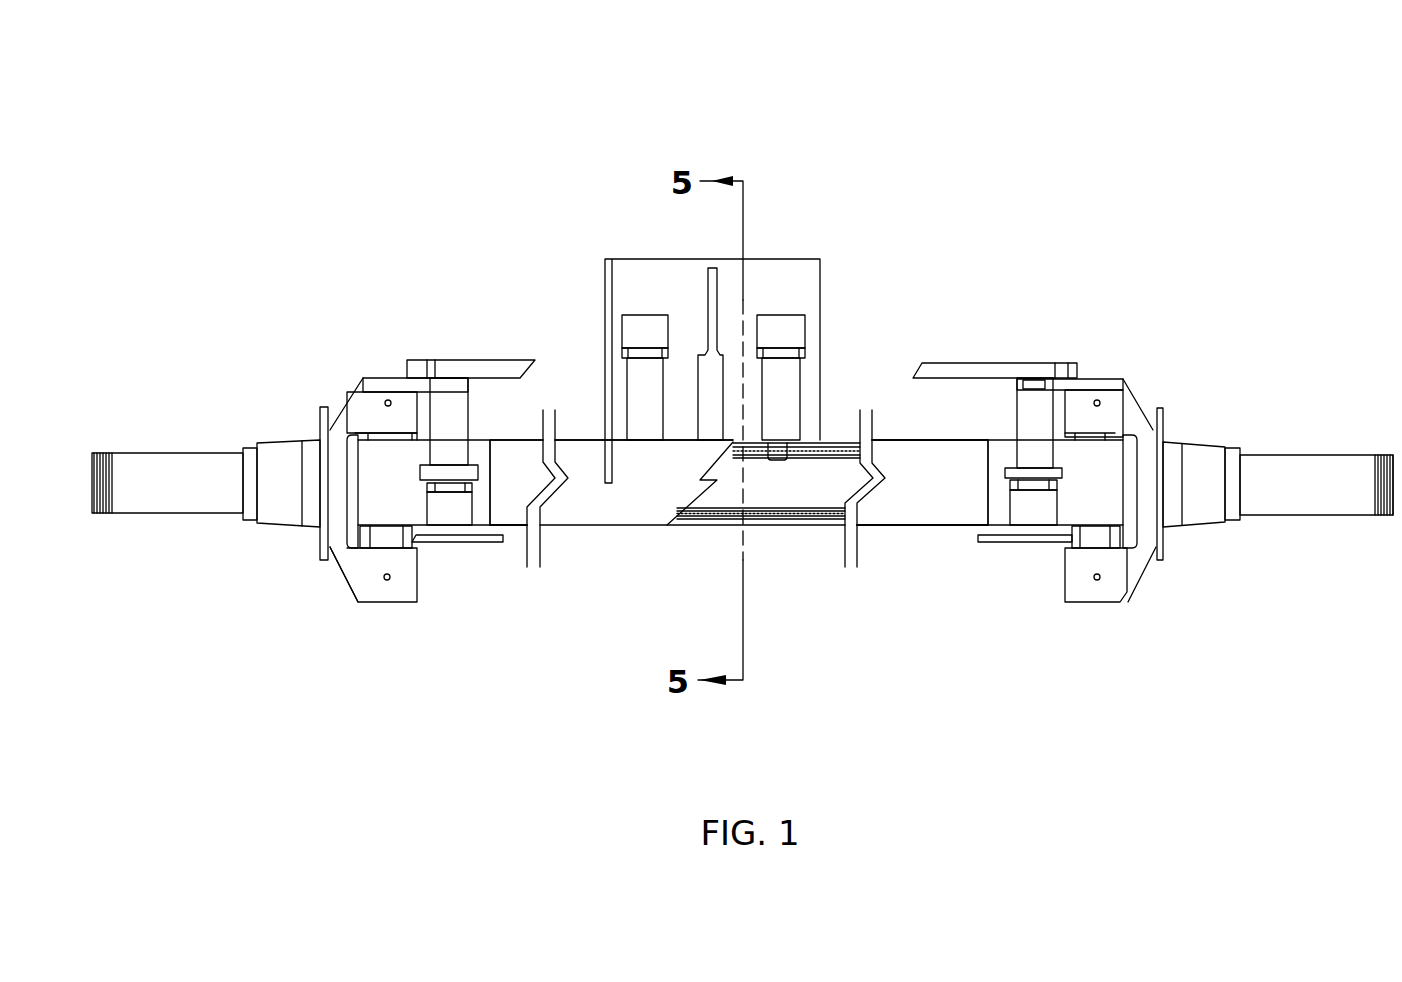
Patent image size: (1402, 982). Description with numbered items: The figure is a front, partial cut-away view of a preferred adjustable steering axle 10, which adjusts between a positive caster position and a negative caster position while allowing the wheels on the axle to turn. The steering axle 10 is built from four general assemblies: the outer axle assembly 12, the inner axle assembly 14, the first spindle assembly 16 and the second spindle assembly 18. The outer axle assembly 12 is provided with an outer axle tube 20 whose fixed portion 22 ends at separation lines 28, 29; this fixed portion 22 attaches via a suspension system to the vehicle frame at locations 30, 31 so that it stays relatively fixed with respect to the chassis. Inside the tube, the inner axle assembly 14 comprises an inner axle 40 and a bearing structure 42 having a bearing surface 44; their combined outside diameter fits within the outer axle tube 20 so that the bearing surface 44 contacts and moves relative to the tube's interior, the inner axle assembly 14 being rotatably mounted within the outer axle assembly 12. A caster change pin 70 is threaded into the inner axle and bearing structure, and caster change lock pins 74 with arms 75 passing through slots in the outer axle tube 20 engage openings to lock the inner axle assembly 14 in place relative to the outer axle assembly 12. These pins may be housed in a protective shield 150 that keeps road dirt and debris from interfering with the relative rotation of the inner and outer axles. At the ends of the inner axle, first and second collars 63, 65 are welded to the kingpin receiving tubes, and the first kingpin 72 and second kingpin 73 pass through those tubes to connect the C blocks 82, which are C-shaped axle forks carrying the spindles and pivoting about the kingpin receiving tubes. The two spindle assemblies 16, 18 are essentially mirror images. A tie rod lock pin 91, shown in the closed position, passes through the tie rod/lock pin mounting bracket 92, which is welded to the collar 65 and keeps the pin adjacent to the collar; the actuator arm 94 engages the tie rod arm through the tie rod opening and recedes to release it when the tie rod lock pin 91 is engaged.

The adjustable steering axle 10 is at (992, 258).
The outer axle assembly 12 is at (602, 550).
The inner axle assembly 14 is at (793, 530).
The first spindle assembly 16 is at (560, 553).
The second spindle assembly 18 is at (468, 555).
The outer axle tube 20 is at (835, 435).
The fixed portion 22 is at (580, 435).
The separation line 28 is at (978, 527).
The separation line 29 is at (490, 440).
The location 30 is at (913, 527).
The location 31 is at (512, 527).
The inner axle 40 is at (775, 527).
The bearing structure 42 is at (705, 527).
The bearing surface 44 is at (683, 527).
The first collar 63 is at (1107, 492).
The second collar 65 is at (383, 470).
The caster change pin 70 is at (712, 407).
The first kingpin 72 is at (1093, 535).
The second kingpin 73 is at (385, 535).
The caster change lock pin 74 is at (638, 387).
The arm 75 is at (787, 460).
The C block 82 is at (362, 407).
The tie rod lock pin 91 is at (452, 512).
The tie rod/lock pin mounting bracket 92 is at (427, 470).
The actuator arm 94 is at (452, 423).
The protective shield 150 is at (605, 278).